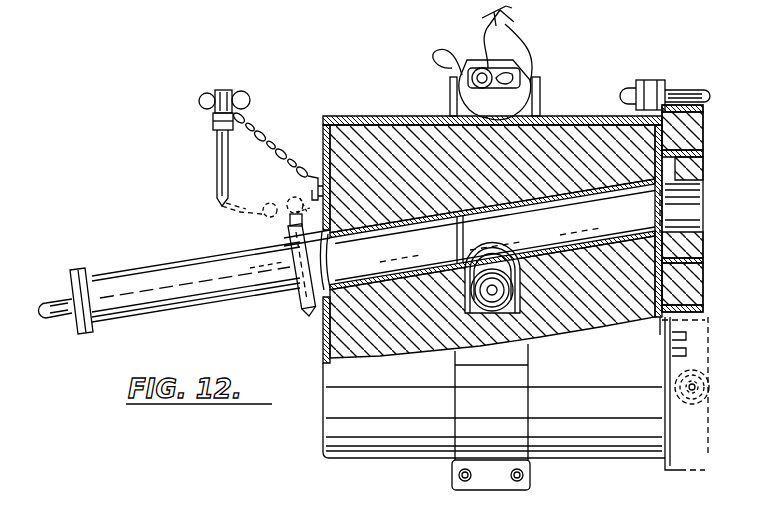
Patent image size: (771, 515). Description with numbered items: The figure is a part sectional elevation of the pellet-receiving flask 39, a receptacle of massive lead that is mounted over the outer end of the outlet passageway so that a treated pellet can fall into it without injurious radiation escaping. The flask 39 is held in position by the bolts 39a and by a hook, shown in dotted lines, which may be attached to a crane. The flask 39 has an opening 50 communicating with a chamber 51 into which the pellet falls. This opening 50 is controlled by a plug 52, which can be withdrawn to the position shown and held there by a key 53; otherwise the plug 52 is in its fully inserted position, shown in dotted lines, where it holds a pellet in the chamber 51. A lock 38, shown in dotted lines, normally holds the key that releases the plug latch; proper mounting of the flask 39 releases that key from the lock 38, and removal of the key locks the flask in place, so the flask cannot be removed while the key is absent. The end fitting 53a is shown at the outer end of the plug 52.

The lock 38 is at (690, 405).
The pellet-receiving flask 39 is at (376, 117).
The bolts 39a is at (628, 80).
The opening 50 is at (585, 217).
The chamber 51 is at (465, 287).
The plug 52 is at (185, 307).
The key 53 is at (215, 166).
The end cap 53a is at (92, 268).